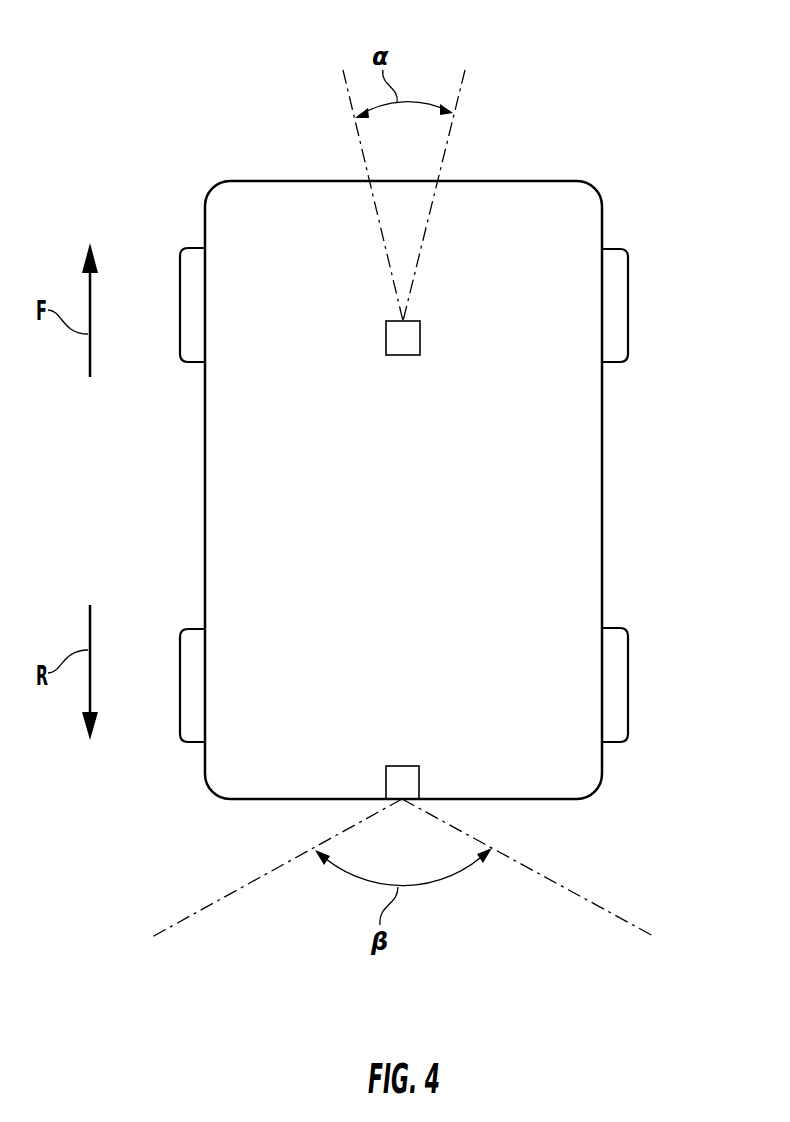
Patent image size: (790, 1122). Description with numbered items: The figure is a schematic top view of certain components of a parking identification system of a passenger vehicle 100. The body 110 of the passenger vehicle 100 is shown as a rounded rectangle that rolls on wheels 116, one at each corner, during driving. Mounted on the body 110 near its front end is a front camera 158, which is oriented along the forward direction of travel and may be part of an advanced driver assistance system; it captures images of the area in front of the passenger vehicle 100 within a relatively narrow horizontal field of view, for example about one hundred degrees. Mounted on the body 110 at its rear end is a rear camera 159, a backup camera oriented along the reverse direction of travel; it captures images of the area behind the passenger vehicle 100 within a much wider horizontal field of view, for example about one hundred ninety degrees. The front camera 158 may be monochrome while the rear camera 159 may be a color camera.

The passenger vehicle 100 is at (150, 104).
The body 110 is at (578, 490).
The wheels 116 is at (615, 304).
The front camera 158 is at (401, 356).
The rear camera 159 is at (402, 766).